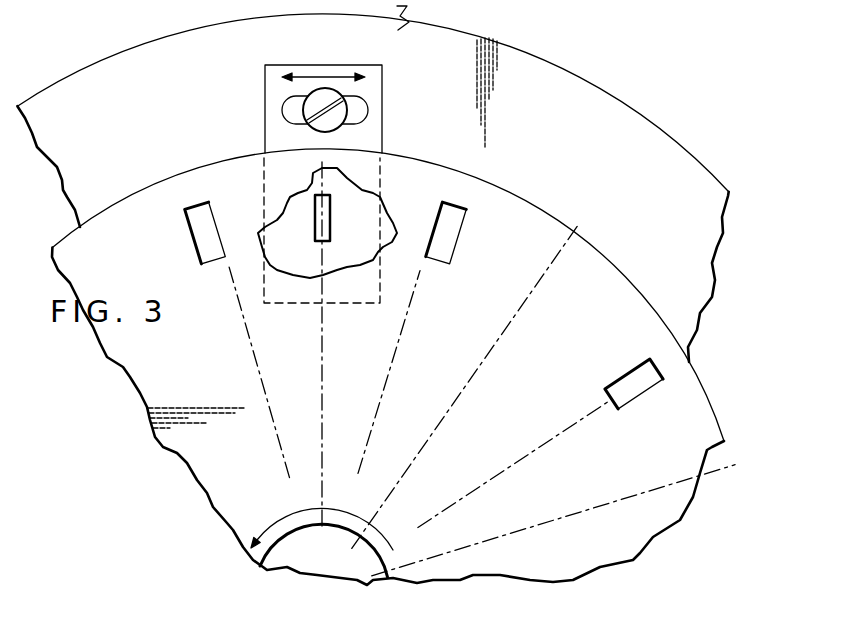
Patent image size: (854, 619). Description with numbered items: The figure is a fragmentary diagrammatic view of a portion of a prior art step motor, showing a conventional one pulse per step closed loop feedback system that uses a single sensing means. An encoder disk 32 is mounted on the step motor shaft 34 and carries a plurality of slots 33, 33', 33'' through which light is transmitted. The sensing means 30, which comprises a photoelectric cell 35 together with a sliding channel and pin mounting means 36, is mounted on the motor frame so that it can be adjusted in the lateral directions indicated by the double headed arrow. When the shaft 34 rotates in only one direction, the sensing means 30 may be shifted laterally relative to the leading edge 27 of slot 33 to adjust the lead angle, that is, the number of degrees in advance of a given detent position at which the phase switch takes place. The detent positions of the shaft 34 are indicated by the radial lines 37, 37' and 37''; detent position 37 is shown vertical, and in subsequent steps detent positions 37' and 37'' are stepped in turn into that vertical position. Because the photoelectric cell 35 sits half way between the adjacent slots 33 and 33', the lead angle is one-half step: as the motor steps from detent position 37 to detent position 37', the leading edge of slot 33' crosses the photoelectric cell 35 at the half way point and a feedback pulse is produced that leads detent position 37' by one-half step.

The leading edge 27 is at (217, 229).
The sensing means 30 is at (383, 110).
The encoder disk 32 is at (552, 247).
The slot 33 is at (155, 222).
The slot 33' is at (470, 233).
The slot 33'' is at (650, 347).
The step motor shaft 34 is at (380, 563).
The photoelectric cell 35 is at (330, 222).
The sliding channel and pin mounting means 36 is at (282, 103).
The detent position 37 is at (350, 344).
The detent position 37' is at (466, 385).
The detent position 37'' is at (553, 520).